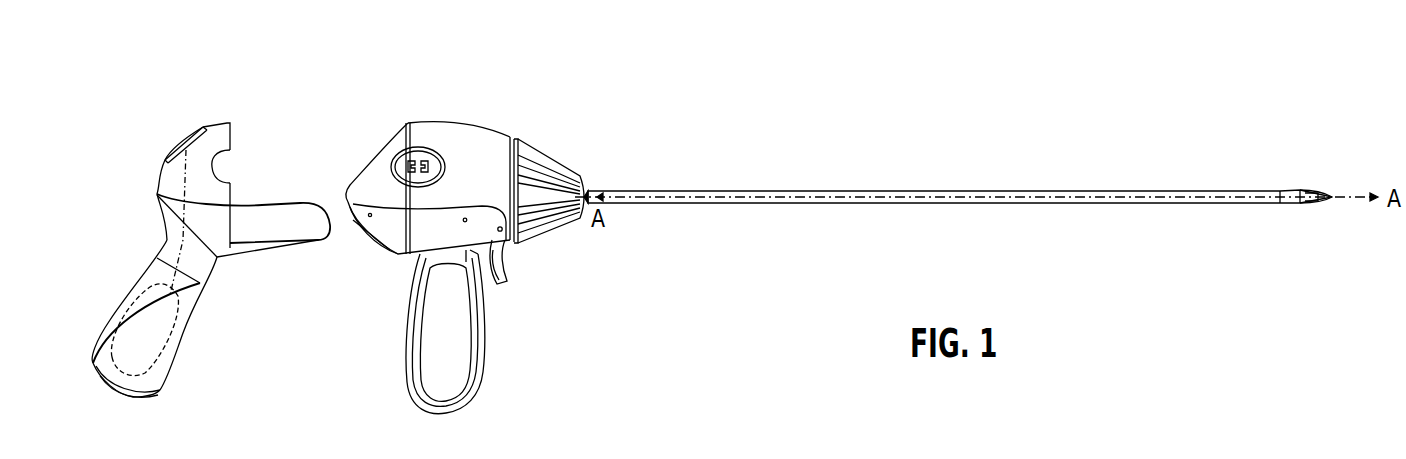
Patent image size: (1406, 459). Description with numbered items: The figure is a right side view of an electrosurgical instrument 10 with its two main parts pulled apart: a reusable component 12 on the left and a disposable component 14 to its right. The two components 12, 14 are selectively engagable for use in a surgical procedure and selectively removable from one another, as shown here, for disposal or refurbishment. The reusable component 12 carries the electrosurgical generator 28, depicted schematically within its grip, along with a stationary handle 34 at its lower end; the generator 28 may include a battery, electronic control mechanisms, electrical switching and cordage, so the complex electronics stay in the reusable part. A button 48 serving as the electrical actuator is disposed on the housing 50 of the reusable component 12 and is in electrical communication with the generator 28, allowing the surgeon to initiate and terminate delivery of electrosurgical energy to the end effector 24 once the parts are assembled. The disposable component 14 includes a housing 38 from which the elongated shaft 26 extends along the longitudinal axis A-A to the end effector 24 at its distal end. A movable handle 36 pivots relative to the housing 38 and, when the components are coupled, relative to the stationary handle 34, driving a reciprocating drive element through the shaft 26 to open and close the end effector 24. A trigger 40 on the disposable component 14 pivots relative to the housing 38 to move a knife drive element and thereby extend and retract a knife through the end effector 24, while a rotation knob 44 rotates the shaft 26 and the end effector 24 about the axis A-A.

The electrosurgical instrument 10 is at (215, 81).
The reusable component 12 is at (140, 232).
The disposable component 14 is at (385, 133).
The end effector 24 is at (1324, 172).
The elongated shaft 26 is at (1085, 190).
The electrosurgical generator 28 is at (163, 341).
The stationary handle 34 is at (160, 394).
The movable handle 36 is at (470, 394).
The housing 38 is at (447, 122).
The trigger 40 is at (506, 260).
The rotation knob 44 is at (550, 147).
The button 48 is at (181, 146).
The housing 50 is at (222, 143).